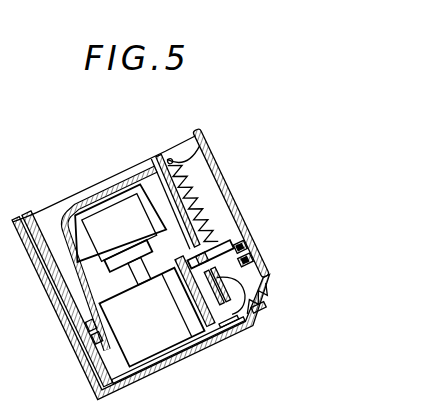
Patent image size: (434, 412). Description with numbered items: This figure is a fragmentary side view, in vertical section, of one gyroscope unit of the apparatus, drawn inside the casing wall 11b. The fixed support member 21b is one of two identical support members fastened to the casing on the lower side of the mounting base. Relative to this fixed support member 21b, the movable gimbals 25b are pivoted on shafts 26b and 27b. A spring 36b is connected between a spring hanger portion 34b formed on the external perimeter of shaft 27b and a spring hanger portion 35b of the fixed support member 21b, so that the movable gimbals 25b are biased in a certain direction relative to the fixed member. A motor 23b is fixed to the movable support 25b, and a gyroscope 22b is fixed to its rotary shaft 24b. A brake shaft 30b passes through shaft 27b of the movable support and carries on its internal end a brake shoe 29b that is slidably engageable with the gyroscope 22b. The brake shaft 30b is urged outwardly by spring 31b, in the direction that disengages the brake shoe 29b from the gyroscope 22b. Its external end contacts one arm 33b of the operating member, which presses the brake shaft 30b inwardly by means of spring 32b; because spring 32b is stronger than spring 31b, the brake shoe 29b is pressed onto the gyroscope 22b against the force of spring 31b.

The housing 11b is at (157, 370).
The fixed support member 21b is at (224, 190).
The gyroscope 22b is at (190, 345).
The motor 23b is at (120, 235).
The rotary shaft 24b is at (143, 258).
The movable gimbals 25b is at (76, 207).
The shaft 26b is at (80, 340).
The shaft 27b is at (237, 226).
The brake shoe 29b is at (232, 336).
The brake shaft 30b is at (256, 266).
The spring 31b is at (265, 313).
The spring 32b is at (251, 251).
The arm 33b is at (265, 295).
The spring hanger portion 34b is at (245, 233).
The spring hanger portion 35b is at (170, 158).
The spring 36b is at (198, 131).